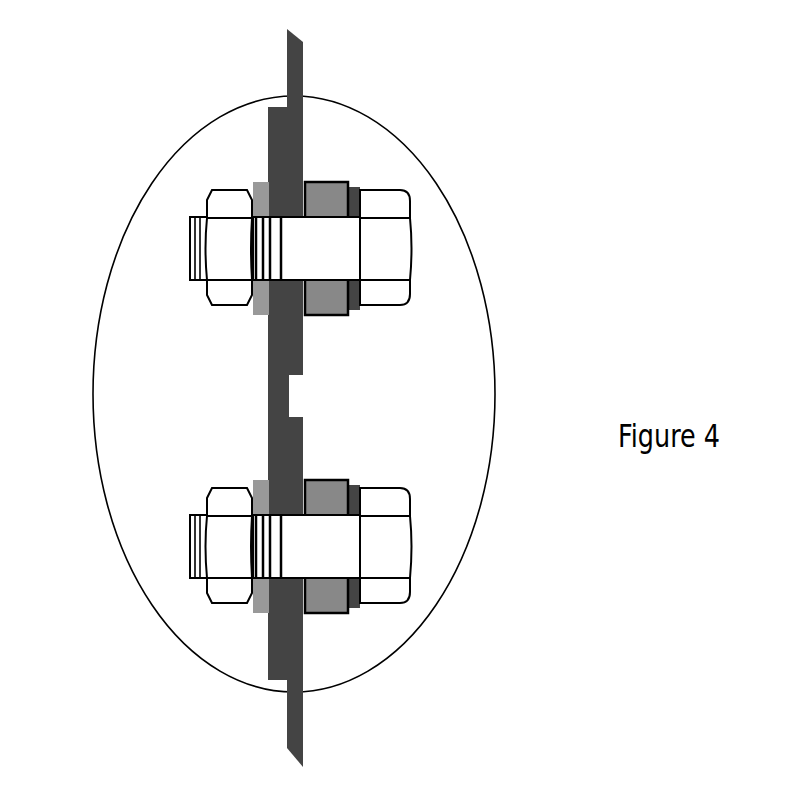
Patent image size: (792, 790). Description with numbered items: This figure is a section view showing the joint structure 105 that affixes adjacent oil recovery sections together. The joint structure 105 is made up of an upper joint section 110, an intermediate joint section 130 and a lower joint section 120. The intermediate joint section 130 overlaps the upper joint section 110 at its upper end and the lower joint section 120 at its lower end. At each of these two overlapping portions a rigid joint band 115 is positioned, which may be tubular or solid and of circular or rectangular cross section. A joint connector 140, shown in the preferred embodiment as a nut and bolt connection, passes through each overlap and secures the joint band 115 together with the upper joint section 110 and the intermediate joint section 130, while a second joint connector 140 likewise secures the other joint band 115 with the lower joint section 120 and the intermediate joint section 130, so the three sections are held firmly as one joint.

The joint structure 105 is at (503, 357).
The upper joint section 110 is at (302, 77).
The joint band 115 is at (330, 187).
The lower joint section 120 is at (292, 703).
The intermediate joint section 130 is at (273, 343).
The joint connector 140 is at (226, 238).